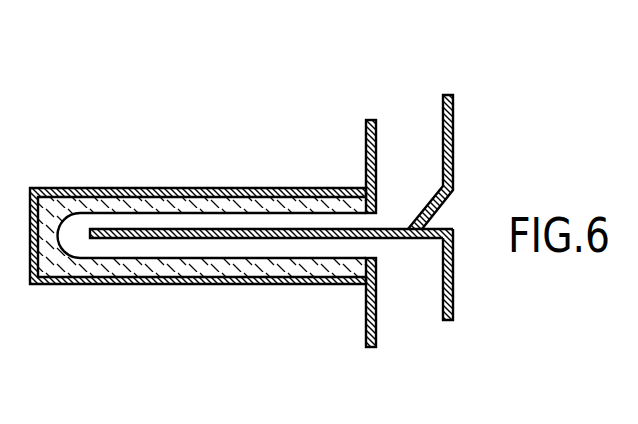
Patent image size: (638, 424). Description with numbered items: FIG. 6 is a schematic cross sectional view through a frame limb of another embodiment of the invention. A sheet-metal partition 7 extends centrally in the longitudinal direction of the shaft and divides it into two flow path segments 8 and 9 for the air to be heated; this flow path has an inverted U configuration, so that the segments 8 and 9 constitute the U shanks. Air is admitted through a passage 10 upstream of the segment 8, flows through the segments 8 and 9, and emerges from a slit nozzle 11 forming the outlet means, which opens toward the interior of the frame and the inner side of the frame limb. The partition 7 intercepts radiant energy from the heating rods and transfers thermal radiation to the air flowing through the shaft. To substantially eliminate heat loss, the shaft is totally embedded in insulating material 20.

The partition 7 is at (248, 236).
The flow path segment 8 is at (112, 256).
The flow path segment 9 is at (200, 213).
The passage 10 is at (410, 303).
The slit nozzle 11 is at (407, 133).
The insulating material 20 is at (98, 190).